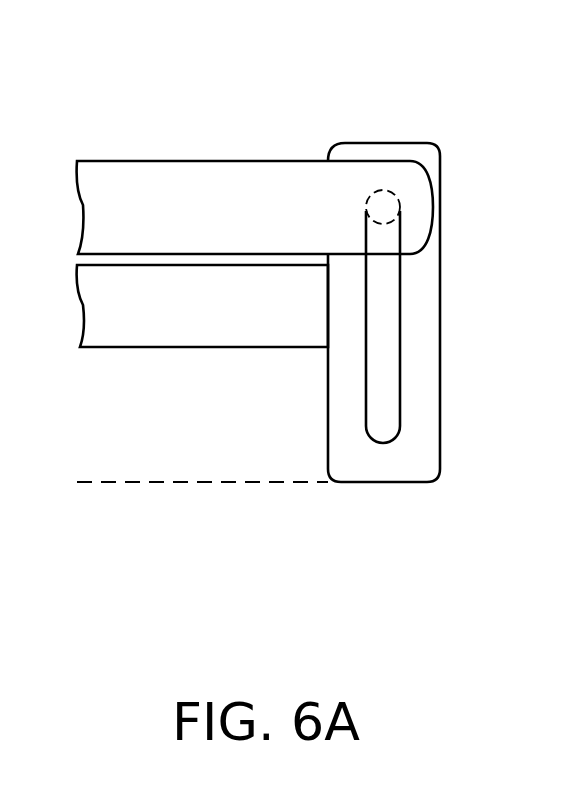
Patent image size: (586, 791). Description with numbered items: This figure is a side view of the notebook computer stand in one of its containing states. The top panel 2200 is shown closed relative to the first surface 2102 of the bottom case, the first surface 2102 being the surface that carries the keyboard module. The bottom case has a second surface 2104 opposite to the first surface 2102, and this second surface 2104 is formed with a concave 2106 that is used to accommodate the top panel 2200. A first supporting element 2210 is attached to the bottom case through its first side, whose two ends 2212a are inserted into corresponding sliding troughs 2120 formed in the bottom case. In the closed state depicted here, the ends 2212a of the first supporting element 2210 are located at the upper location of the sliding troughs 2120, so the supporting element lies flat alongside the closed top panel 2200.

The top panel 2200 is at (259, 178).
The first supporting element 2210 is at (380, 158).
The ends 2212a is at (400, 206).
The sliding troughs 2120 is at (392, 413).
The first surface 2102 is at (151, 265).
The second surface 2104 is at (258, 490).
The concave 2106 is at (222, 427).